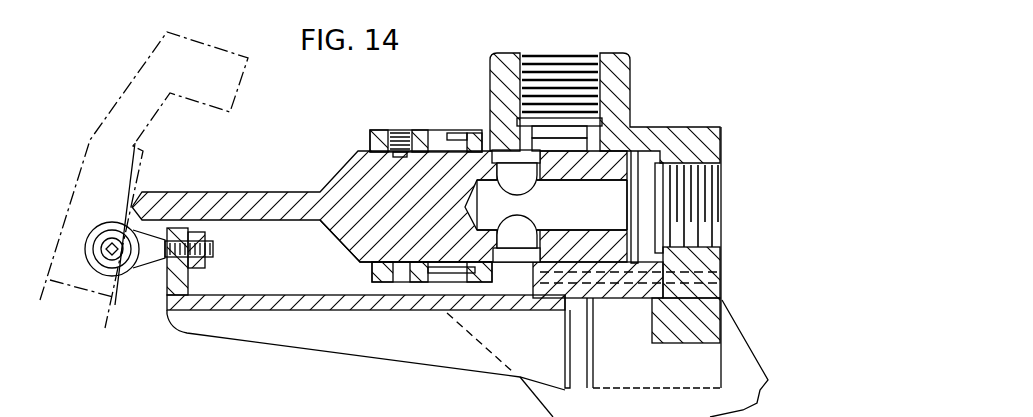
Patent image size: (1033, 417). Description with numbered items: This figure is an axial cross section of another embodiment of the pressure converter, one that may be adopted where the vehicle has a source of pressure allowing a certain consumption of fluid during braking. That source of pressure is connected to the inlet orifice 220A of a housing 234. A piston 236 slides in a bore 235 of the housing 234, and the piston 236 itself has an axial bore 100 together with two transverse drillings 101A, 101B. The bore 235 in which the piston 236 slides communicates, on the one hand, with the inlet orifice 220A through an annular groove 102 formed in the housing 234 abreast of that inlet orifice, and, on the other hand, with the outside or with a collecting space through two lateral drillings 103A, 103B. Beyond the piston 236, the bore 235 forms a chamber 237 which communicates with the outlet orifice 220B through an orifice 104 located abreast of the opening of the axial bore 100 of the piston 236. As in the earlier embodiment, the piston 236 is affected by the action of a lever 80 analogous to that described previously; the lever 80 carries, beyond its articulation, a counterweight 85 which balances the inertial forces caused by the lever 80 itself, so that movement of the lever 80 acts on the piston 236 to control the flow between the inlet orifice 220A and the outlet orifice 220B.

The counterweight 85 is at (136, 65).
The lever 80 is at (118, 314).
The piston 236 is at (329, 178).
The bore 235 is at (400, 255).
The axial bore 100 is at (574, 232).
The transverse drilling 101A is at (506, 166).
The transverse drilling 101B is at (530, 240).
The lateral drilling 103A is at (438, 151).
The lateral drilling 103B is at (443, 277).
The inlet orifice 220A is at (601, 44).
The outlet orifice 220B is at (712, 172).
The housing 234 is at (644, 78).
The orifice 104 is at (650, 182).
The chamber 237 is at (636, 215).
The annular groove 102 is at (582, 268).